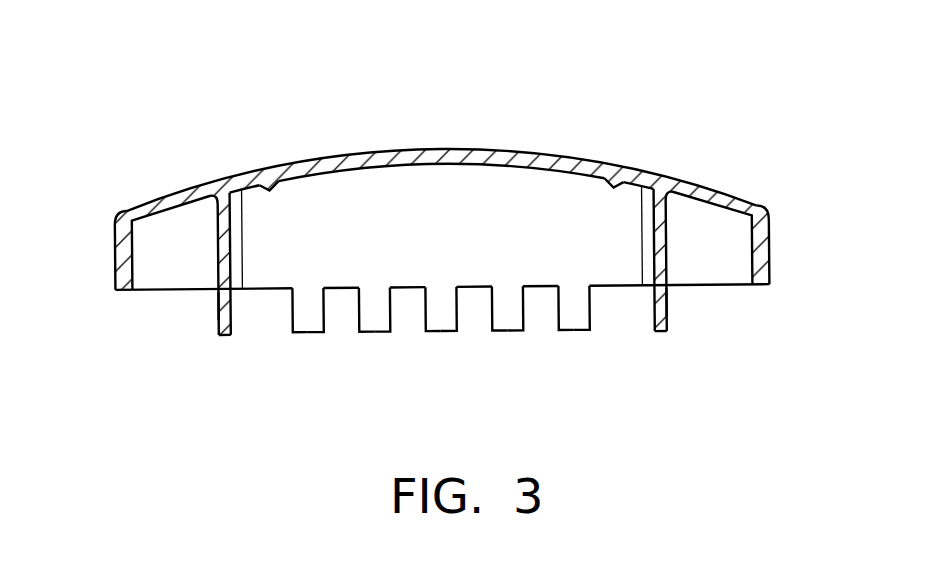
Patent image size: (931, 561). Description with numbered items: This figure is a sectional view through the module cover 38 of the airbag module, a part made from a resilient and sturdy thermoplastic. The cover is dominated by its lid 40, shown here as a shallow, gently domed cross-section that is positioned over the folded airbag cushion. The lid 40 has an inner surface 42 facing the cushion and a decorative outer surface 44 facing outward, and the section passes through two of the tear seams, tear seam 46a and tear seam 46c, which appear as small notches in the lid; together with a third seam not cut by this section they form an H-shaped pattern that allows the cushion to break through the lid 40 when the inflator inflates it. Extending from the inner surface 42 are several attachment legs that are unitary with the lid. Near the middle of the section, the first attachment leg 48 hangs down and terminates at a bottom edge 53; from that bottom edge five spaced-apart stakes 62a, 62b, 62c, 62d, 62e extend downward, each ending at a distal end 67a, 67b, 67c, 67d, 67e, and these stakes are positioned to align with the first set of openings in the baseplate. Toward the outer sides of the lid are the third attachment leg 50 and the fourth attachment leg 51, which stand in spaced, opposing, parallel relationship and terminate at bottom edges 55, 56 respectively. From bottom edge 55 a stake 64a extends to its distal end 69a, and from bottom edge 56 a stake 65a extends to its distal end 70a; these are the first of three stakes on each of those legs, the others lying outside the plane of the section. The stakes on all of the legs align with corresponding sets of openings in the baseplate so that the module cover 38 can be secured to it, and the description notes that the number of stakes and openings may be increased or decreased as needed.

The module cover 38 is at (470, 84).
The lid 40 is at (595, 158).
The inner surface 42 is at (378, 172).
The decorative outer surface 44 is at (338, 154).
The tear seam 46a is at (276, 186).
The tear seam 46c is at (606, 185).
The first attachment leg 48 is at (246, 292).
The third attachment leg 50 is at (216, 246).
The fourth attachment leg 51 is at (668, 238).
The bottom edge 53 is at (622, 287).
The bottom edge 55 is at (216, 310).
The bottom edge 56 is at (668, 300).
The stake 62a is at (323, 318).
The stake 62b is at (390, 318).
The stake 62c is at (456, 318).
The stake 62d is at (522, 318).
The stake 62e is at (589, 318).
The stake 64a is at (216, 326).
The stake 65a is at (667, 318).
The distal end 67a is at (297, 333).
The distal end 67b is at (363, 333).
The distal end 67c is at (430, 333).
The distal end 67d is at (497, 333).
The distal end 67e is at (564, 333).
The distal end 69a is at (226, 338).
The distal end 70a is at (660, 332).